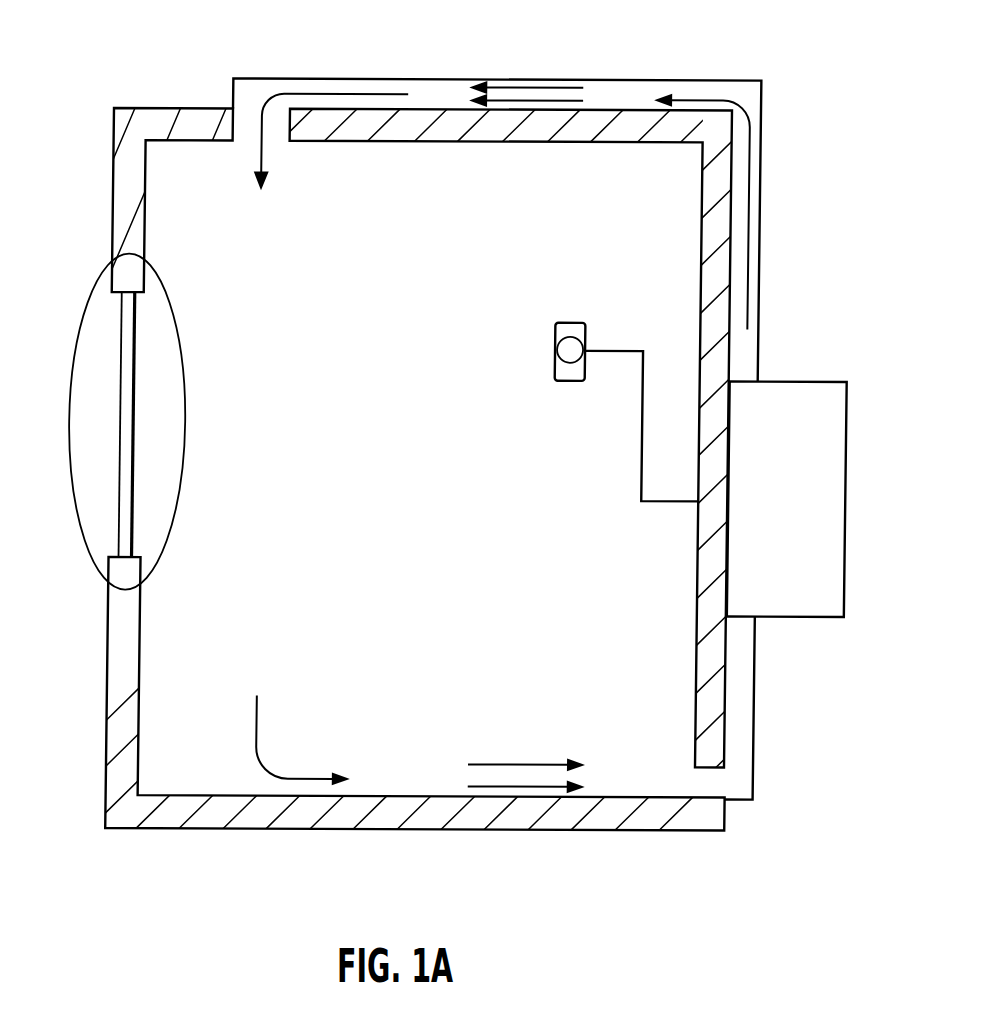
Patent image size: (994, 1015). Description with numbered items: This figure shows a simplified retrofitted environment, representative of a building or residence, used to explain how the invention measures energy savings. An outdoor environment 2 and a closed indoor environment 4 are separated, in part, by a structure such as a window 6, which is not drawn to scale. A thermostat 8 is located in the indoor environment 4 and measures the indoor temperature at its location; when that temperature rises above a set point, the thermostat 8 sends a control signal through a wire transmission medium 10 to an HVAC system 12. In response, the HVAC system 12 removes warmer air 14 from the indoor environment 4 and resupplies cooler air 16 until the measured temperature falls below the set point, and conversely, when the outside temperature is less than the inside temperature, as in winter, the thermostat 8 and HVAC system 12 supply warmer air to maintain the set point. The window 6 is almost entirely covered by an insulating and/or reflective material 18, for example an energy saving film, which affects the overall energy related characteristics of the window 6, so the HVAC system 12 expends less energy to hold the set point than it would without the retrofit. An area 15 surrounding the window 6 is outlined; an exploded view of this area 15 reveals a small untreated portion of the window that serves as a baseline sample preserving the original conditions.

The outdoor environment 2 is at (57, 539).
The closed indoor environment 4 is at (453, 546).
The window 6 is at (128, 325).
The thermostat 8 is at (572, 381).
The wire transmission medium 10 is at (670, 499).
The HVAC system 12 is at (852, 545).
The warmer air 14 is at (311, 778).
The area surrounding the window 15 is at (185, 490).
The cooler air 16 is at (535, 87).
The insulating and/or reflective material 18 is at (138, 420).